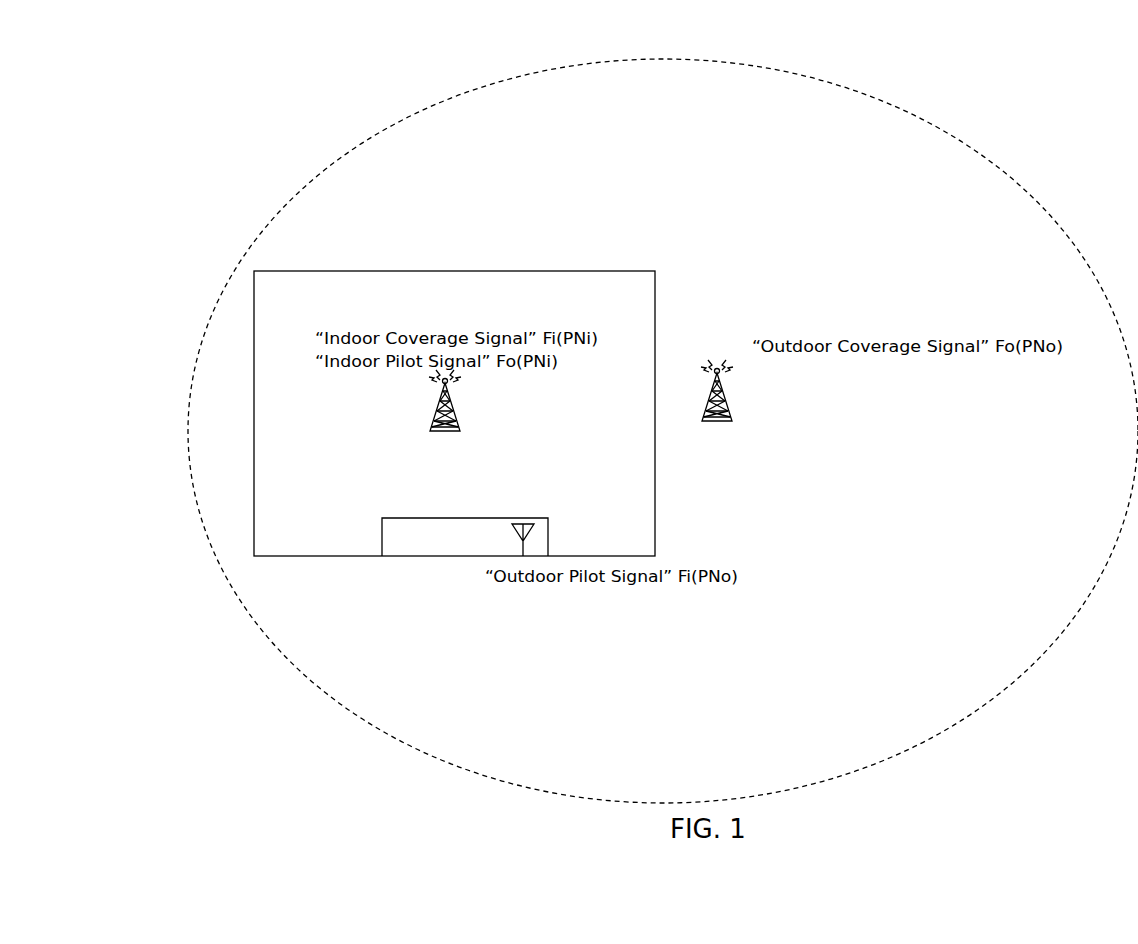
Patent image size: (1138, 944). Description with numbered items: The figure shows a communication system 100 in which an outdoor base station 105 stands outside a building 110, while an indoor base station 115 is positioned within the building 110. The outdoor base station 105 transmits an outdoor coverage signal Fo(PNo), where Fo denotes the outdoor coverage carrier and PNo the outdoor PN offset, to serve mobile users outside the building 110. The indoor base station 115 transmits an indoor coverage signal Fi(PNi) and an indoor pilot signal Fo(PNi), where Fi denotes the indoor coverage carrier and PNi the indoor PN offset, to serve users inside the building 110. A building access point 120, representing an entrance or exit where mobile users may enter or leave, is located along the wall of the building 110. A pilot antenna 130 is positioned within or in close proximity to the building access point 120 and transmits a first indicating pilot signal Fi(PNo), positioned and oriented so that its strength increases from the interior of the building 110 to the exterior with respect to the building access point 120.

The communication system 100 is at (1130, 118).
The outdoor base station 105 is at (715, 355).
The building 110 is at (455, 271).
The indoor base station 115 is at (468, 401).
The building access point 120 is at (465, 538).
The pilot antenna 130 is at (545, 508).